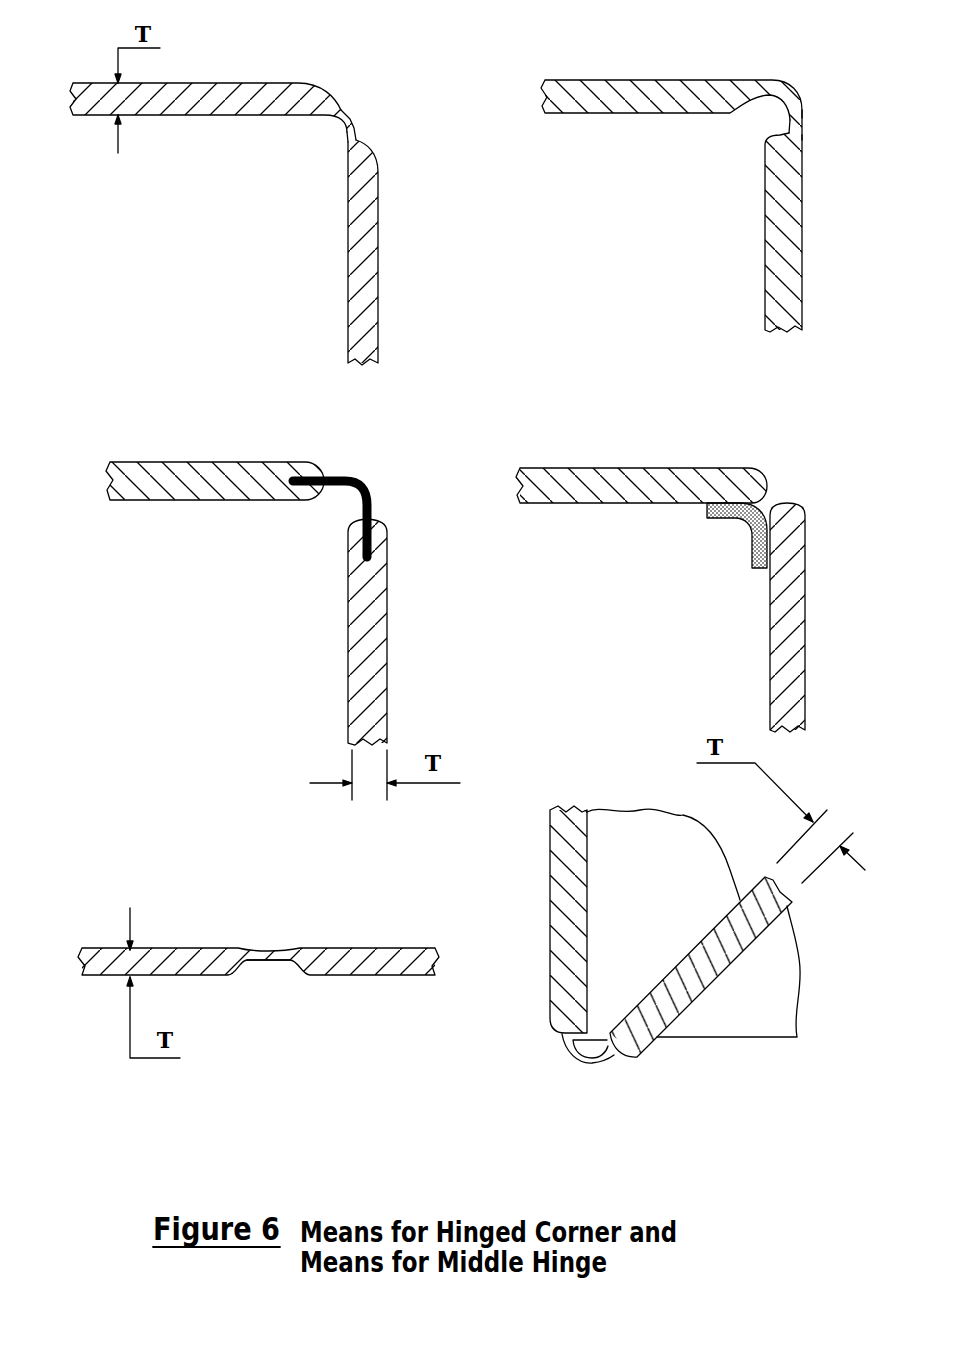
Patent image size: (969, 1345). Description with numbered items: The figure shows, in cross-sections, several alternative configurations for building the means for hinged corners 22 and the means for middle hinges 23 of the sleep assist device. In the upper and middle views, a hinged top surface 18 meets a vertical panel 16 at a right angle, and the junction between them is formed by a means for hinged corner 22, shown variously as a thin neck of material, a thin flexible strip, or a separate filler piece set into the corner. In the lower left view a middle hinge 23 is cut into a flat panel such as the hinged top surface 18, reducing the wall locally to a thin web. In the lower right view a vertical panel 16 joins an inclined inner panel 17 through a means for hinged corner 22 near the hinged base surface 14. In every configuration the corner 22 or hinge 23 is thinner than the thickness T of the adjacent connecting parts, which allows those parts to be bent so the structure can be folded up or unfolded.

The hinged base surface 14 is at (642, 907).
The vertical panel 16 is at (366, 240).
The inner panel 17 is at (708, 958).
The hinged top surface 18 is at (262, 103).
The means for hinged corner 22 is at (345, 118).
The means for middle hinge 23 is at (266, 961).